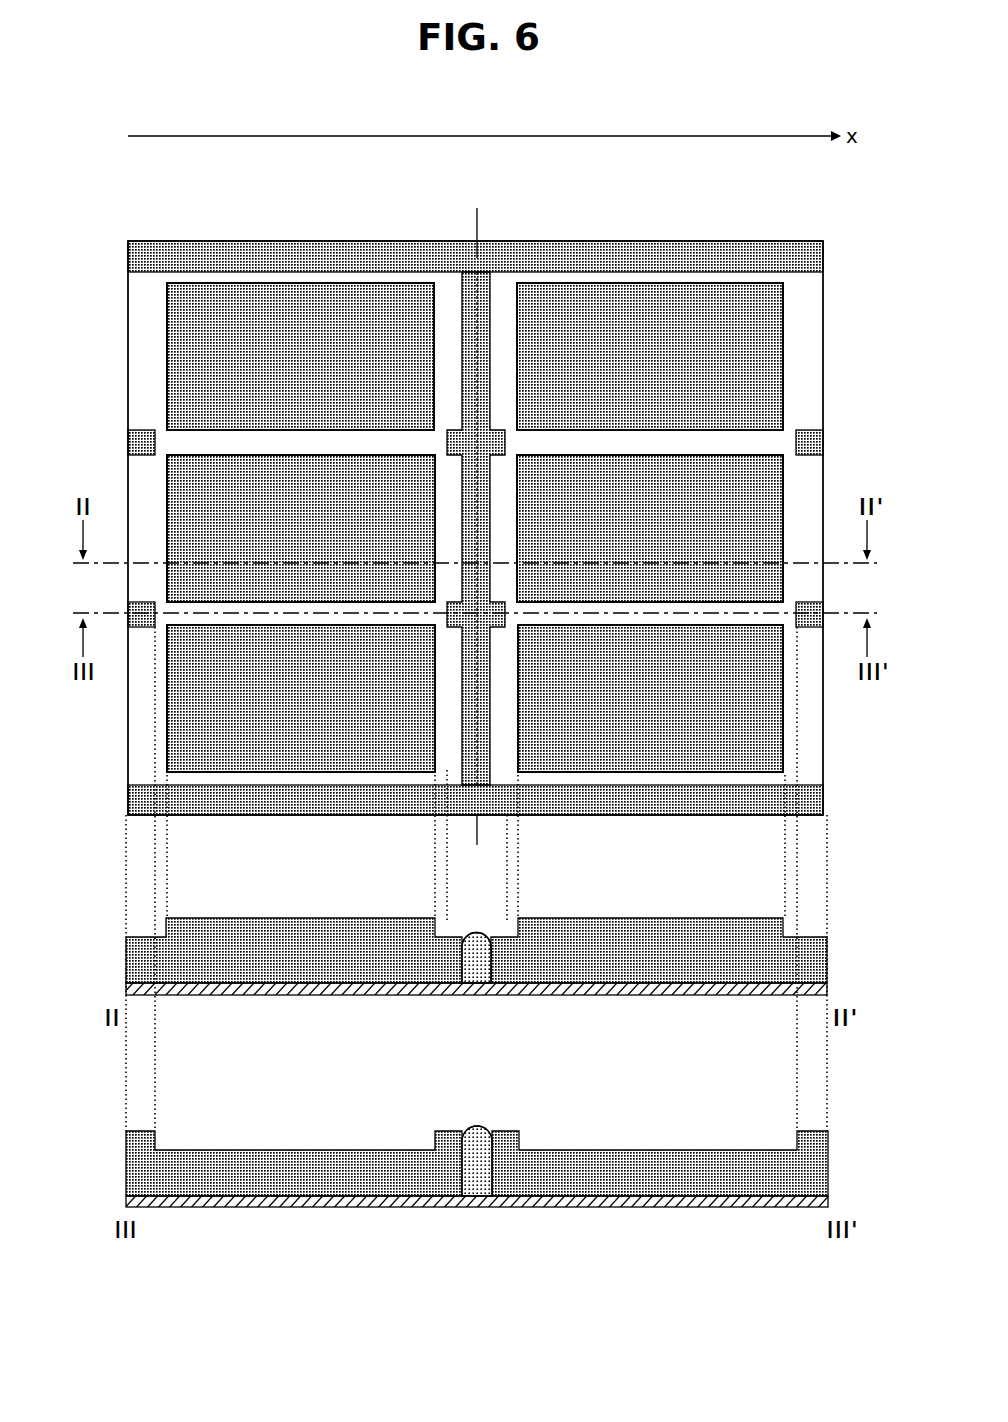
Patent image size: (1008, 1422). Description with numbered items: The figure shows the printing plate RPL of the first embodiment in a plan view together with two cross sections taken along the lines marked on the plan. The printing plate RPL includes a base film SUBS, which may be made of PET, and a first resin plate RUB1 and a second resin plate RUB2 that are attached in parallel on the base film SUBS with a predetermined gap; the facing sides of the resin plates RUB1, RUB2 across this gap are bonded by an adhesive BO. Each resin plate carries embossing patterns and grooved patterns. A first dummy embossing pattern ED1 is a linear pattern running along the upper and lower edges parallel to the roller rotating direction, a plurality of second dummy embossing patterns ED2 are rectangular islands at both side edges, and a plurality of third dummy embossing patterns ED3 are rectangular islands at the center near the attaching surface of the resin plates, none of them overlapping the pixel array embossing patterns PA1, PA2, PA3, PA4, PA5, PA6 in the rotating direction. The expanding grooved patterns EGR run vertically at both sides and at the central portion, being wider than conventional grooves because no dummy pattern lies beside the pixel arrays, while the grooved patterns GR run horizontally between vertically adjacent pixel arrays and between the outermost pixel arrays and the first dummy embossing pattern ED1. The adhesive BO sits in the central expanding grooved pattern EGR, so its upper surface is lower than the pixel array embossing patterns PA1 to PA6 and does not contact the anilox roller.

The printing plate RPL is at (117, 224).
The first dummy embossing pattern ED1 is at (652, 262).
The second dummy embossing pattern ED2 is at (132, 442).
The third dummy embossing pattern ED3 is at (506, 441).
The expanding grooved pattern EGR is at (140, 316).
The pixel array embossing pattern PA1 is at (320, 368).
The pixel array embossing pattern PA2 is at (668, 368).
The pixel array embossing pattern PA3 is at (320, 538).
The pixel array embossing pattern PA4 is at (668, 538).
The pixel array embossing pattern PA5 is at (320, 710).
The pixel array embossing pattern PA6 is at (668, 710).
The adhesive BO is at (476, 930).
The first resin plate RUB1 is at (278, 976).
The second resin plate RUB2 is at (657, 976).
The base film SUBS is at (421, 990).
The grooved pattern GR is at (278, 1149).